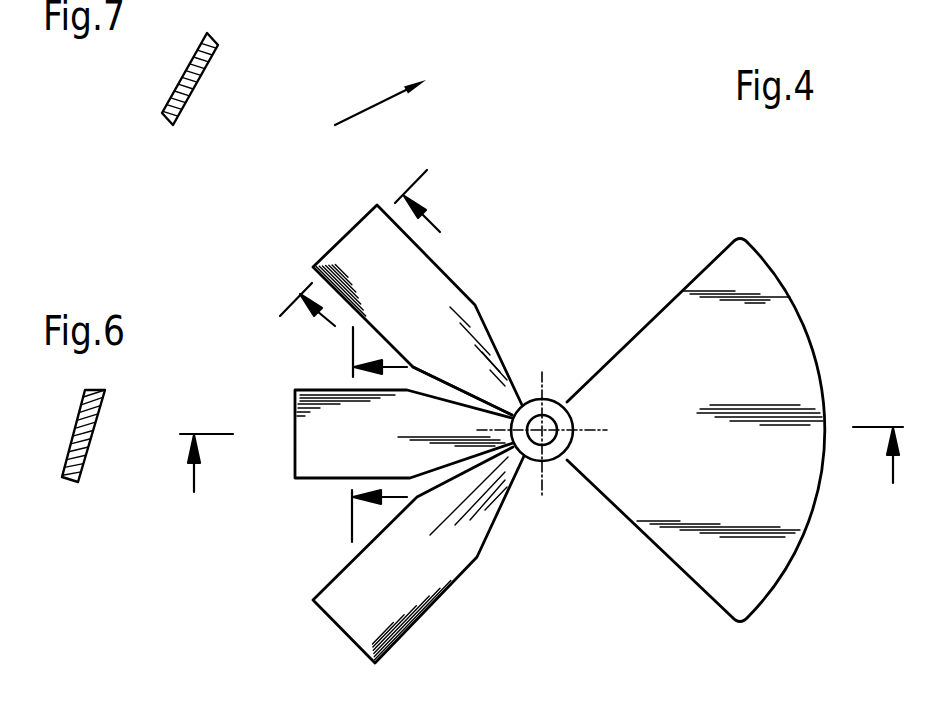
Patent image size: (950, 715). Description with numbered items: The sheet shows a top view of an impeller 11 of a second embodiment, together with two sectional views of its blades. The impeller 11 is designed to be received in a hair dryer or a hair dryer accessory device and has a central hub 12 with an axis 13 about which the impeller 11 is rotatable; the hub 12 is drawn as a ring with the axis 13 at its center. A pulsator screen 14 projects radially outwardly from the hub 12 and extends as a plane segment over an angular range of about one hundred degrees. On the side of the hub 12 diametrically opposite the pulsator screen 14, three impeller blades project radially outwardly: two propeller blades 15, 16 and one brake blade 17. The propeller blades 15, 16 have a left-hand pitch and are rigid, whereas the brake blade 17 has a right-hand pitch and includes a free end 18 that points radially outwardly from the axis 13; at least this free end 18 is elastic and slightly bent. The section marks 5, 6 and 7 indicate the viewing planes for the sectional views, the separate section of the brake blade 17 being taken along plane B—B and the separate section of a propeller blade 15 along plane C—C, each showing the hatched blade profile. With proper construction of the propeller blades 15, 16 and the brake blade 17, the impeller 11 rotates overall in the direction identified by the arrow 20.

In FIG. 4, the impeller 11 is at (527, 308).
In FIG. 4, the hub 12 is at (556, 400).
In FIG. 4, the axis 13 is at (548, 443).
In FIG. 4, the pulsator screen 14 is at (793, 358).
In FIG. 7, the propeller blade 15 is at (168, 101).
In FIG. 4, the propeller blade 15 is at (364, 230).
In FIG. 4, the propeller blade 16 is at (345, 623).
In FIG. 6, the brake blade 17 is at (66, 478).
In FIG. 4, the brake blade 17 is at (343, 466).
In FIG. 4, the free end 18 is at (297, 437).
In FIG. 4, the arrow 20 is at (372, 103).
In FIG. 4, the section line for Fig. 5 is at (541, 462).
In FIG. 4, the section line for Fig. 6 is at (379, 434).
In FIG. 4, the section line for Fig. 7 is at (370, 259).